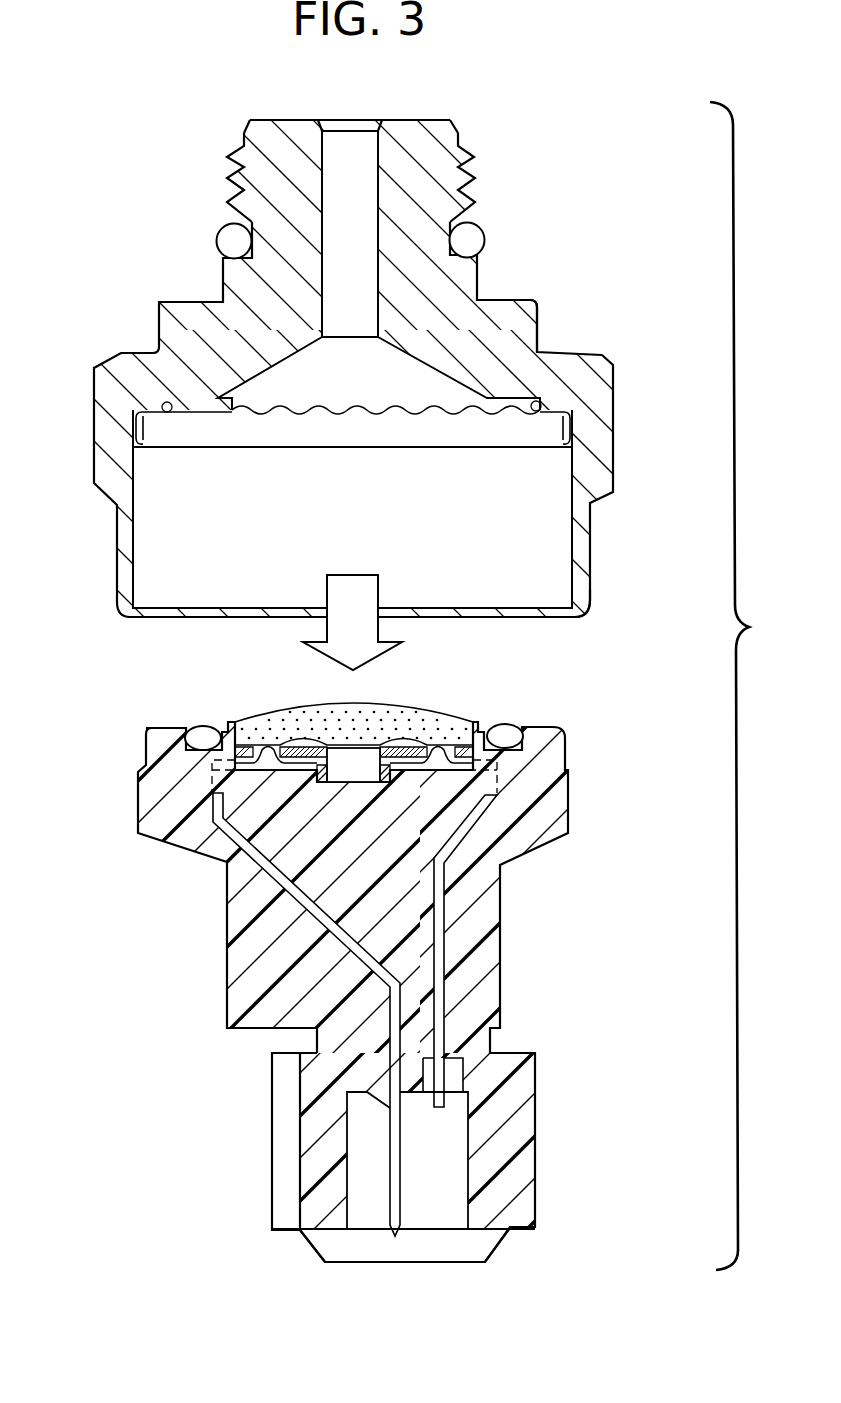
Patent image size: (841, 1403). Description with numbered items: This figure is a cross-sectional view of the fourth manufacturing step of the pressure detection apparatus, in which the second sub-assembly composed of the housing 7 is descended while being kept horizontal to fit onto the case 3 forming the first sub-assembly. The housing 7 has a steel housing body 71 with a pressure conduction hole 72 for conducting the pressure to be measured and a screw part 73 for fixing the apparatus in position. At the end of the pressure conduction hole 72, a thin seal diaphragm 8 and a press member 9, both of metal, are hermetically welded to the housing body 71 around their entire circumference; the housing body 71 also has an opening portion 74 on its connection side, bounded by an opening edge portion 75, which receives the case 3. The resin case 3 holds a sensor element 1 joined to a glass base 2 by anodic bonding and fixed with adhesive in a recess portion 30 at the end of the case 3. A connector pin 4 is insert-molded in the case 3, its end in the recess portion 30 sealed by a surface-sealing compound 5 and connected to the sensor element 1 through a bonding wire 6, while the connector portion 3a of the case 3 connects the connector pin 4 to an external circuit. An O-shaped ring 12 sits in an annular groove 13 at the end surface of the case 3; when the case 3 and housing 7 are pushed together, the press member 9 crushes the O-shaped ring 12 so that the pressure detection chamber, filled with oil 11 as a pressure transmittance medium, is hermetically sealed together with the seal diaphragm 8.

The sensor element 1 is at (333, 783).
The base 2 is at (350, 770).
The case 3 is at (538, 1086).
The connector portion 3a is at (480, 1242).
The connector pin 4 is at (390, 1137).
The surface-sealing compound 5 is at (246, 722).
The bonding wire 6 is at (423, 730).
The housing 7 is at (614, 447).
The seal diaphragm 8 is at (395, 403).
The press member 9 is at (515, 405).
The oil 11 is at (296, 722).
The O-shaped ring 12 is at (507, 733).
The annular groove 13 is at (518, 730).
The recess portion 30 is at (370, 787).
The housing body 71 is at (497, 310).
The pressure conduction hole 72 is at (378, 140).
The screw part 73 is at (473, 183).
The opening portion 74 is at (136, 583).
The opening edge portion 75 is at (583, 605).